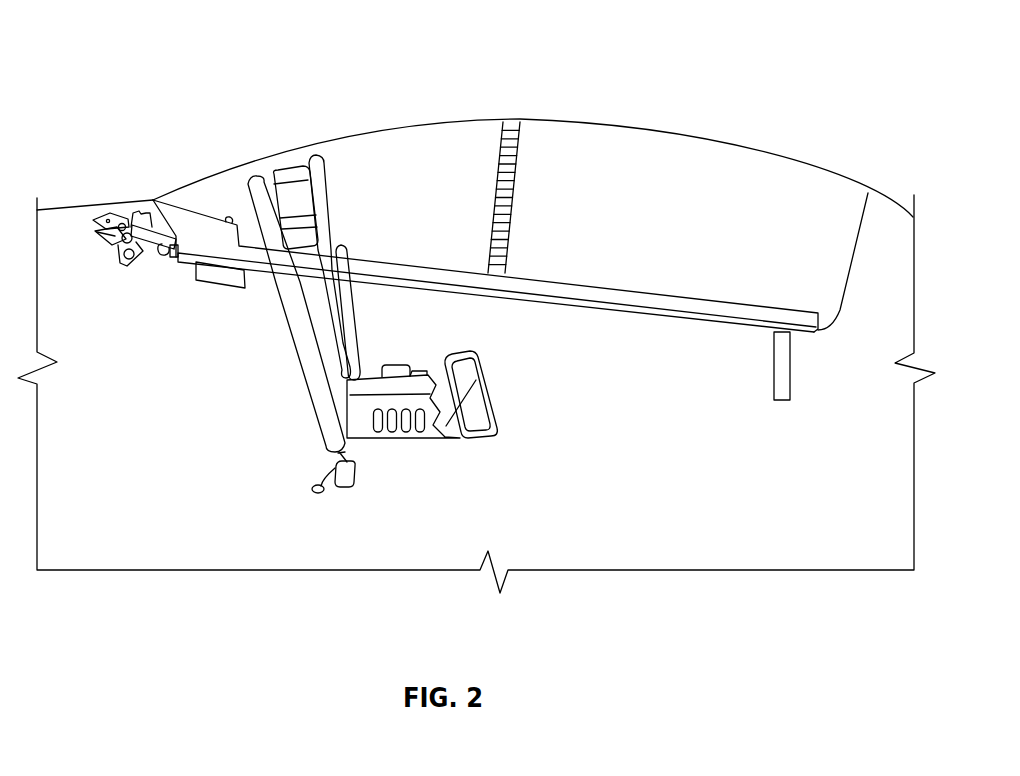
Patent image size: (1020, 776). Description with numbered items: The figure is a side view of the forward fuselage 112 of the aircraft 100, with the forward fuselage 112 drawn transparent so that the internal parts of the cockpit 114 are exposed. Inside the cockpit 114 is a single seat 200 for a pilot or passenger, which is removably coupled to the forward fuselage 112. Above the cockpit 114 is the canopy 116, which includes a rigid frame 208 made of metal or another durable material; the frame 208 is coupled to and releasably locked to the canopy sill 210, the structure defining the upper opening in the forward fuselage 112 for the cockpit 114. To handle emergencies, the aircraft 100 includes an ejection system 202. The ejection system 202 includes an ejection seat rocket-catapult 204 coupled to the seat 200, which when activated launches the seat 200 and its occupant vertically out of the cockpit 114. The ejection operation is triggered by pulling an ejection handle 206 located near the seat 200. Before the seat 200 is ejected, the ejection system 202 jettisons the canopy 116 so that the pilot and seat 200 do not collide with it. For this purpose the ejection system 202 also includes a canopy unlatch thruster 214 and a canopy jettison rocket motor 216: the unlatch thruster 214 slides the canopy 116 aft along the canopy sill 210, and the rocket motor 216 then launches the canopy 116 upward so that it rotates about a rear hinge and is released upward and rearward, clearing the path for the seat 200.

The aircraft 100 is at (133, 44).
The forward fuselage 112 is at (107, 198).
The cockpit 114 is at (769, 184).
The canopy 116 is at (424, 124).
The seat 200 is at (442, 428).
The ejection system 202 is at (672, 461).
The ejection seat rocket-catapult 204 is at (355, 467).
The ejection handle 206 is at (460, 356).
The frame 208 is at (405, 272).
The canopy sill 210 is at (377, 288).
The canopy unlatch thruster 214 is at (207, 284).
The canopy jettison rocket motor 216 is at (772, 347).